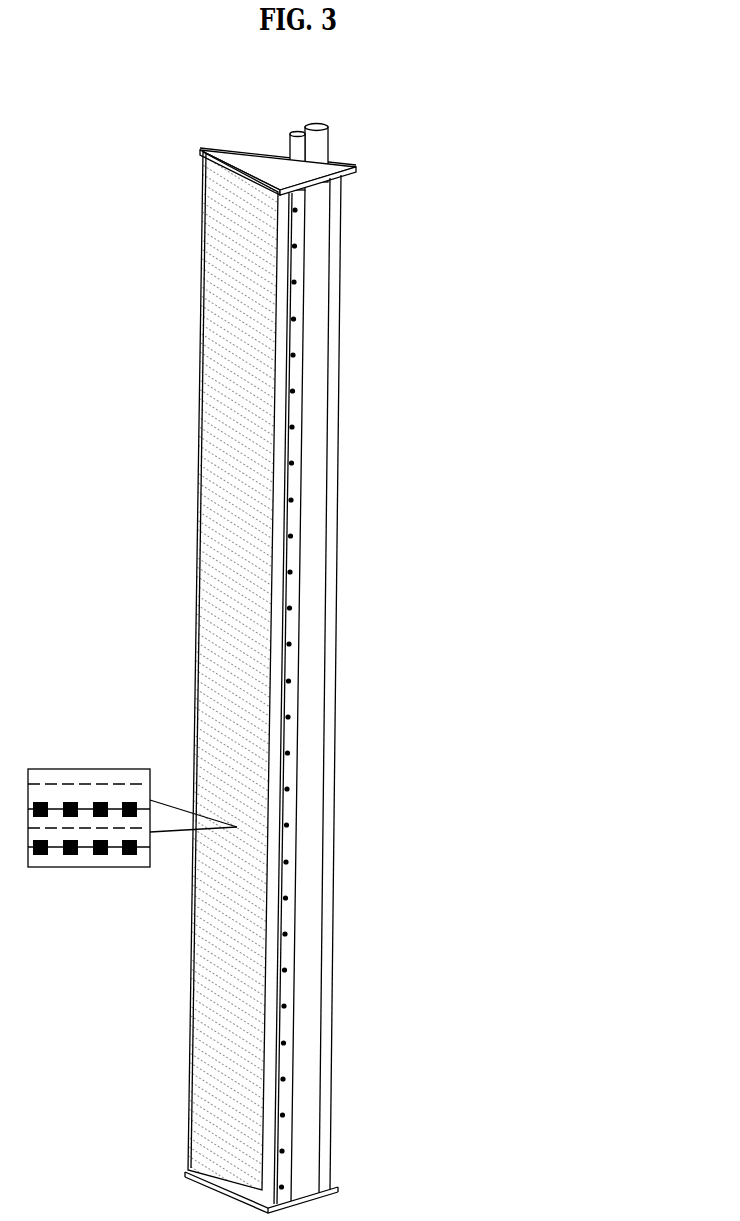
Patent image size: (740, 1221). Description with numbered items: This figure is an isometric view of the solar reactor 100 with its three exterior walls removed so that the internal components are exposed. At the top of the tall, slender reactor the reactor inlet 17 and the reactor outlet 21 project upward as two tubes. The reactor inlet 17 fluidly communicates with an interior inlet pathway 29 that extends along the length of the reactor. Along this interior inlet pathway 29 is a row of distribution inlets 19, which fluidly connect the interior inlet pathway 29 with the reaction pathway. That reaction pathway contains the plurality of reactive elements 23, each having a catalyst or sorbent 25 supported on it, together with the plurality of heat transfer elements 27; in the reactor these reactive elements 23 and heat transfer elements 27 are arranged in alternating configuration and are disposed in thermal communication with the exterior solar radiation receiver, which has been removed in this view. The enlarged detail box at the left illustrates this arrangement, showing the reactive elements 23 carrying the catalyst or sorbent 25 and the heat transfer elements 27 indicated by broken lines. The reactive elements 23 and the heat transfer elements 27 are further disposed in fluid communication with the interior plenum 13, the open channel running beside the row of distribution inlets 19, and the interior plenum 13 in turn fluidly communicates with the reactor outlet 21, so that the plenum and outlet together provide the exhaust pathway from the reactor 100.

The solar reactor 100 is at (295, 641).
The interior plenum 13 is at (312, 542).
The reactor inlet 17 is at (293, 132).
The distribution inlets 19 is at (292, 355).
The reactor outlet 21 is at (318, 122).
The reactive elements 23 is at (142, 848).
The catalyst or sorbent 25 is at (67, 855).
The heat transfer elements 27 is at (130, 783).
The interior inlet pathway 29 is at (298, 263).